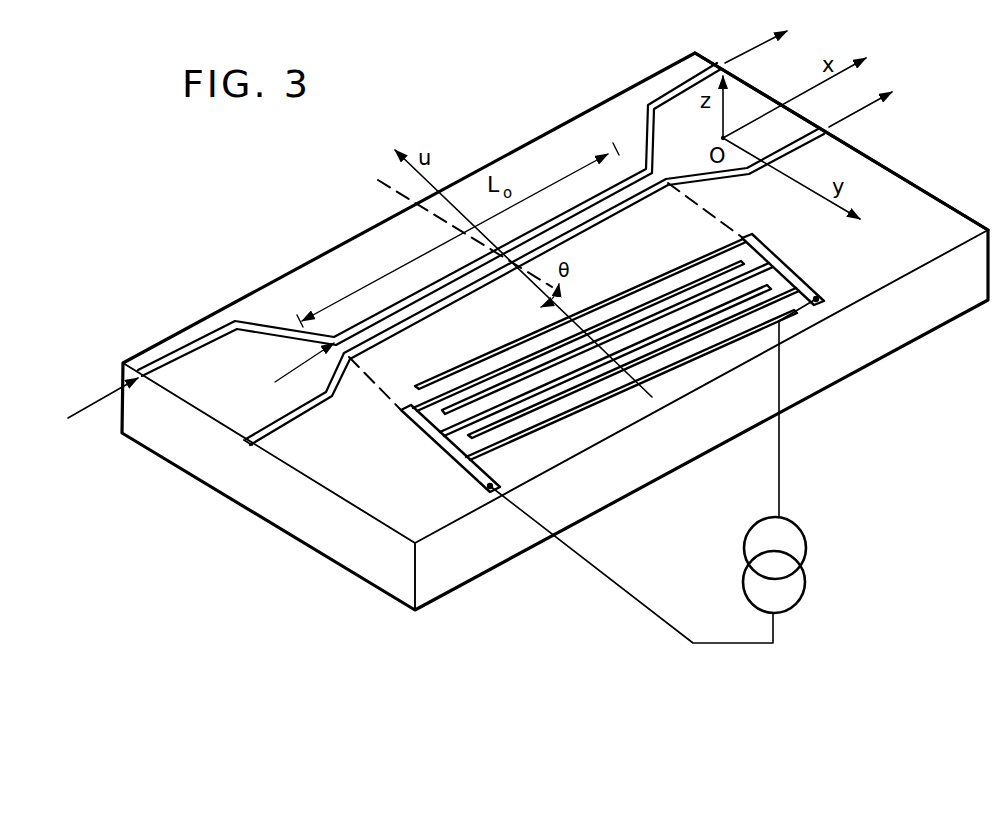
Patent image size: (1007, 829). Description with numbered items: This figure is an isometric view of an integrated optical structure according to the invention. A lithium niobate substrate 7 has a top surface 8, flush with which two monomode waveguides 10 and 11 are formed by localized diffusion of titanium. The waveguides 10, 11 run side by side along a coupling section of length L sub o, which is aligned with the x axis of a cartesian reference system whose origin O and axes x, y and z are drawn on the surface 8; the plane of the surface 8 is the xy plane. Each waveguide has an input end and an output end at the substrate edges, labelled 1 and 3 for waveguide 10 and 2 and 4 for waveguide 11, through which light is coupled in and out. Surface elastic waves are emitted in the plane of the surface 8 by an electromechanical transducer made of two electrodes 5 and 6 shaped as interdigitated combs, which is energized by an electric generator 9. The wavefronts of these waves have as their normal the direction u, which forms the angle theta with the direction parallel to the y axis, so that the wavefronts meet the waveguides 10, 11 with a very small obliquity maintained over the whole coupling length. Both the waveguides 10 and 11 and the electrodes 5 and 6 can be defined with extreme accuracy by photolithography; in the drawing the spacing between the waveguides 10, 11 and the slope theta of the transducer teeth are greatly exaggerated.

The input end of first optical waveguide 1 is at (143, 382).
The input end of second optical waveguide 2 is at (249, 445).
The output end of first optical waveguide 3 is at (721, 62).
The output end of second optical waveguide 4 is at (822, 130).
The electrode 5 is at (447, 452).
The electrode 6 is at (783, 264).
The lithium niobate substrate 7 is at (316, 546).
The surface 8 is at (939, 212).
The electric generator 9 is at (798, 523).
The monomode waveguide 10 is at (191, 365).
The monomode waveguide 11 is at (285, 425).